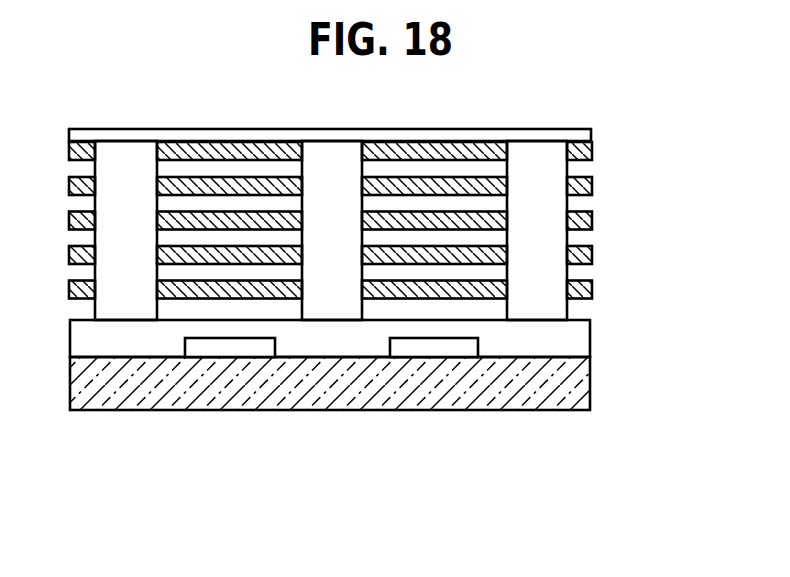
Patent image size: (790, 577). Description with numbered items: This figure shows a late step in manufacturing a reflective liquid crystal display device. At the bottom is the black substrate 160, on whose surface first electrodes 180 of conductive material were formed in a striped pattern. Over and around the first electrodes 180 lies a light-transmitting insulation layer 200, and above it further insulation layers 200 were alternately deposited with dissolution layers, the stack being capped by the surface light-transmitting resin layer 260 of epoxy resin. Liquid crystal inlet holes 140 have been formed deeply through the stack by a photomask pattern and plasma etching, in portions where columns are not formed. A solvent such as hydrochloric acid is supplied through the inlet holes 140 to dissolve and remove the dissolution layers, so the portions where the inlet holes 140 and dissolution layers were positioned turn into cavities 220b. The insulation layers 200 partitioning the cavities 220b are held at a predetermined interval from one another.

The liquid crystal inlet hole 140 is at (528, 170).
The black substrate 160 is at (578, 389).
The first electrode 180 is at (433, 352).
The light-transmitting insulation layer 200 is at (586, 160).
The cavity 220b is at (587, 172).
The surface light-transmitting resin layer 260 is at (574, 138).